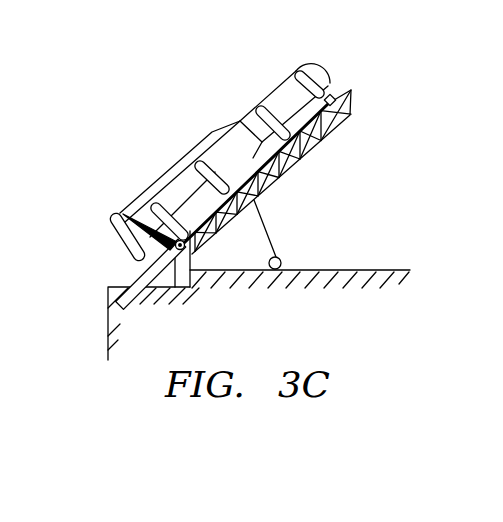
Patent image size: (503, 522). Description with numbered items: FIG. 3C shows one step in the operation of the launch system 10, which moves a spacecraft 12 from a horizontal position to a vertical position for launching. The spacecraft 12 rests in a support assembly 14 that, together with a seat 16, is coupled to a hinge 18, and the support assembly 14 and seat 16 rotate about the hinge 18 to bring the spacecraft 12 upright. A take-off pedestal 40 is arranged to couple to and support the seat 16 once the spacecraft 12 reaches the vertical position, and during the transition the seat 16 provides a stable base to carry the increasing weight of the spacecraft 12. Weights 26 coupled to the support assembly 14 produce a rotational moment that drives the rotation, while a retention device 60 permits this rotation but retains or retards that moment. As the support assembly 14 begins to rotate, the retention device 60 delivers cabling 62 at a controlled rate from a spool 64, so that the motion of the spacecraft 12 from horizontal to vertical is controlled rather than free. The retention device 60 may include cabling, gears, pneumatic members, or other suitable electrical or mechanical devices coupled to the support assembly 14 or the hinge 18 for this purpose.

The launch system 10 is at (226, 138).
The spacecraft 12 is at (172, 169).
The support assembly 14 is at (346, 74).
The seat 16 is at (112, 216).
The hinge 18 is at (188, 247).
The weights 26 is at (140, 303).
The take-off pedestal 40 is at (108, 327).
The retention device 60 is at (295, 179).
The cabling 62 is at (267, 229).
The spool 64 is at (287, 258).